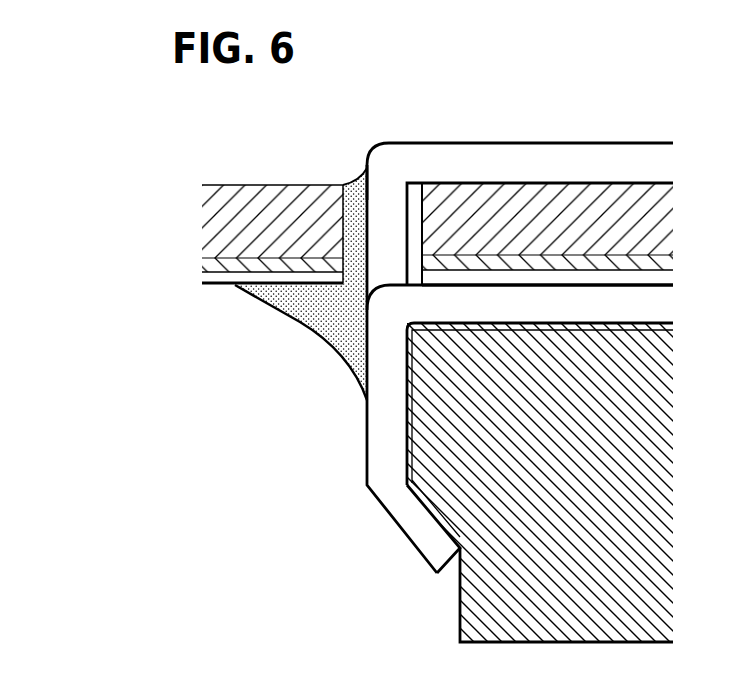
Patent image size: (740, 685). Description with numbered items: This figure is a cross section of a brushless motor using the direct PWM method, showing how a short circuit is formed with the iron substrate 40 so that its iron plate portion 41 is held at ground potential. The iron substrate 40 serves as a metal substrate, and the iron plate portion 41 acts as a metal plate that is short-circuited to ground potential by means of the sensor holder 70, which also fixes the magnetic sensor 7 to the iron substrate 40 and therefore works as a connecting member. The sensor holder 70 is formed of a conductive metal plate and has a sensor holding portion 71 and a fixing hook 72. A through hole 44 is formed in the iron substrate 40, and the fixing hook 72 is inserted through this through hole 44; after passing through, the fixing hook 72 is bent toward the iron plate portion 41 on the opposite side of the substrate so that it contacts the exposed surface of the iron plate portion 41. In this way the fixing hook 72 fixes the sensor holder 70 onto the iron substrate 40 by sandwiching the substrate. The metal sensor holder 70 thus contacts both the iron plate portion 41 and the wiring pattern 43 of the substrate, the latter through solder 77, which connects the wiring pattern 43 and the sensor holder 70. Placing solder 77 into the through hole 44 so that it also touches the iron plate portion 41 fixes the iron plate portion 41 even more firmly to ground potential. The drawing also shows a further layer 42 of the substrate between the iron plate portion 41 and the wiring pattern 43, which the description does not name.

The magnetic sensor 7 is at (477, 620).
The iron substrate 40 is at (76, 263).
The iron plate portion 41 is at (207, 220).
The second layer 42 is at (207, 262).
The wiring pattern 43 is at (215, 283).
The through hole 44 is at (325, 192).
The sensor holder 70 is at (385, 518).
The sensor holding portion 71 is at (430, 550).
The fixing hook 72 is at (513, 153).
The solder 77 is at (333, 333).